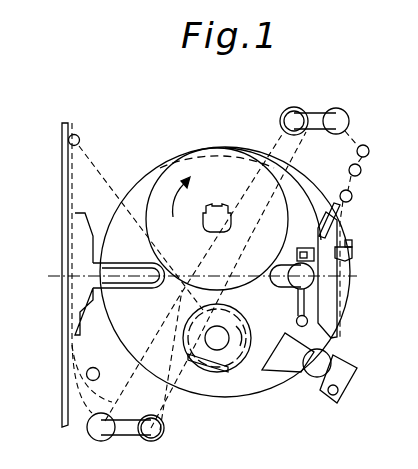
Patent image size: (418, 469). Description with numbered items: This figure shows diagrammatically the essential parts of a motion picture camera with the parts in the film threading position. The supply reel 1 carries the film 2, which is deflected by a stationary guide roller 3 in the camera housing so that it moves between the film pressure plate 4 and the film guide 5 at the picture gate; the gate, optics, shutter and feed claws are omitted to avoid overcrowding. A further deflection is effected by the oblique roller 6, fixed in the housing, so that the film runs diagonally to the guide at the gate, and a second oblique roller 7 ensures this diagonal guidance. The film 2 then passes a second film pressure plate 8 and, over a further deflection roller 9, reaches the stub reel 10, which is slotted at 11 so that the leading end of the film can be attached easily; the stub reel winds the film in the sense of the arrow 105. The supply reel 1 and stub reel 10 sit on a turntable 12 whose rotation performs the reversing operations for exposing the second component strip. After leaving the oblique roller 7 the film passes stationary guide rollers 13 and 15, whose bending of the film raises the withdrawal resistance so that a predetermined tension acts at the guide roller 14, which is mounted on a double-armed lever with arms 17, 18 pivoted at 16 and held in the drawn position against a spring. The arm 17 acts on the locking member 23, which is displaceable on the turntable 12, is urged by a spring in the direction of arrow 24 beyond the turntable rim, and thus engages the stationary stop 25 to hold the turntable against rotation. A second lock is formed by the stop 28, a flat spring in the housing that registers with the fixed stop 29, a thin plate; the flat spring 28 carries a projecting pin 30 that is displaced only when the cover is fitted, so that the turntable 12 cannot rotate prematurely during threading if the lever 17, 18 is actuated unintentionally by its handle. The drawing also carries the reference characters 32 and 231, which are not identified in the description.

The supply reel 1 is at (185, 172).
The film 2 is at (104, 162).
The stationary guide roller 3 is at (76, 134).
The film pressure plate 4 is at (82, 233).
The film guide 5 is at (63, 390).
The oblique roller 6 is at (158, 438).
The second oblique roller 7 is at (336, 114).
The second film pressure plate 8 is at (330, 290).
The deflection roller 9 is at (312, 373).
The stub reel 10 is at (238, 360).
The slot 11 is at (225, 370).
The turntable 12 is at (265, 378).
The stationary guide roller 13 is at (362, 171).
The guide roller 14 is at (353, 196).
The stationary guide roller 15 is at (370, 150).
The pivot 16 is at (292, 282).
The lever arm 17 is at (308, 237).
The lever arm 18 is at (297, 300).
The locking member 23 is at (297, 254).
The arrow 24 is at (353, 255).
The stationary stop 25 is at (353, 240).
The stop 28 is at (357, 389).
The fixed stop 29 is at (342, 345).
The projecting pin 30 is at (338, 402).
The hub shaft 32 is at (62, 275).
The arrow 105 is at (207, 321).
The pivot 231 is at (308, 322).